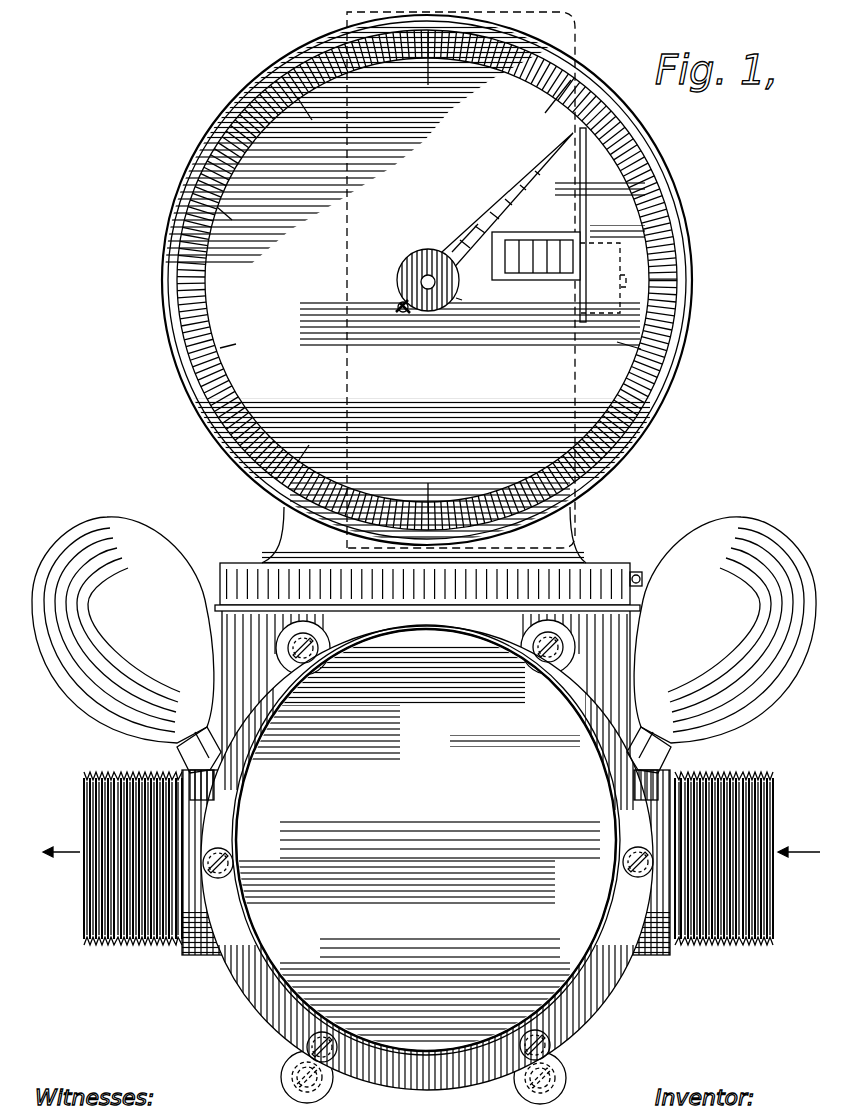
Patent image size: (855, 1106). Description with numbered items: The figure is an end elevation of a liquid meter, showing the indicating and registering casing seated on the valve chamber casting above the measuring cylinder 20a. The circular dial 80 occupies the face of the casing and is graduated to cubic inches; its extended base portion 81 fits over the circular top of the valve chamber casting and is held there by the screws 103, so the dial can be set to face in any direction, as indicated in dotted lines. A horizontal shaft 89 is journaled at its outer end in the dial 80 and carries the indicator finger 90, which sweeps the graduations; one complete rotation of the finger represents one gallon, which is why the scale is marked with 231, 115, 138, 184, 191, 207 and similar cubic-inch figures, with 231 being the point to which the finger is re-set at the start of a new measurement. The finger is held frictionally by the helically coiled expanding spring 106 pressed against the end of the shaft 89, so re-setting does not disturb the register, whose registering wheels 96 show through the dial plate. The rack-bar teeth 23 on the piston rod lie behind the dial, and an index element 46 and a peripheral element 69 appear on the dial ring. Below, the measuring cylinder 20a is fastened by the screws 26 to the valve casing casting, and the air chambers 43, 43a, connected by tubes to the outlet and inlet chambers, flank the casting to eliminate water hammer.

The measuring cylinder 20a is at (421, 840).
The annular teeth 23 is at (547, 110).
The screws 26 is at (294, 644).
The air chamber 43 is at (126, 658).
The air chamber 43a is at (721, 658).
The index plate 46 is at (634, 210).
The dial ring 69 is at (616, 342).
The dial 80 is at (505, 201).
The base portion 81 is at (586, 564).
The horizontal shaft 89 is at (425, 273).
The indicator finger 90 is at (481, 220).
The registering wheels 96 is at (542, 274).
The screws 103 is at (643, 578).
The helically coiled expanding spring 106 is at (458, 296).
The scale mark 115 is at (425, 487).
The scale mark 138 is at (314, 442).
The scale mark 184 is at (244, 214).
The scale mark 191 is at (240, 344).
The scale mark 207 is at (317, 121).
The scale mark 231 is at (427, 68).